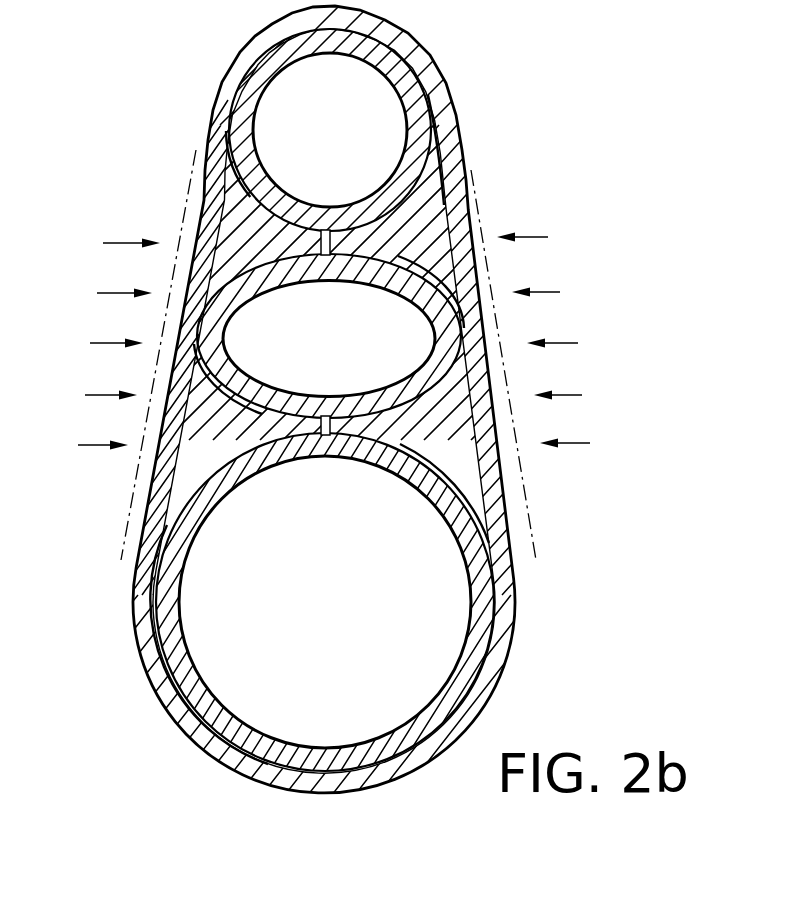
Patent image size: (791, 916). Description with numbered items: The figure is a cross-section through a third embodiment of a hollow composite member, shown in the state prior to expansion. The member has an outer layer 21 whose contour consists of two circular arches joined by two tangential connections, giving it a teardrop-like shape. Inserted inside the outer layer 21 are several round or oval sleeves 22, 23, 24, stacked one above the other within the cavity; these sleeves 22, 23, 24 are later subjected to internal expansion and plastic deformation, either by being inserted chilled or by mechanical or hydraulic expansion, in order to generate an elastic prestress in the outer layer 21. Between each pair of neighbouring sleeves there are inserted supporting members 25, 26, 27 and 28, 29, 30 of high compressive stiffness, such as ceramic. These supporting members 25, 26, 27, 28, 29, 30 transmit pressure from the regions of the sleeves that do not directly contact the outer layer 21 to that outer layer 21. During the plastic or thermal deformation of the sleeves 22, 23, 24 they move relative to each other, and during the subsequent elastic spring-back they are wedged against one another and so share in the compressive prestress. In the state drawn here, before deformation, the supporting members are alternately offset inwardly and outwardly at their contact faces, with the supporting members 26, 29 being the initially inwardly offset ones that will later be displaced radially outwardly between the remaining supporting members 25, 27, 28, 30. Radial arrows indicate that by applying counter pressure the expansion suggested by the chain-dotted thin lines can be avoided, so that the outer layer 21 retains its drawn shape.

The outer layer 21 is at (452, 172).
The sleeve 22 is at (400, 76).
The sleeve 23 is at (448, 340).
The sleeve 24 is at (487, 606).
The supporting member 25 is at (230, 181).
The supporting member 26 is at (238, 212).
The supporting member 27 is at (225, 264).
The supporting member 28 is at (198, 395).
The supporting member 29 is at (163, 452).
The supporting member 30 is at (178, 490).